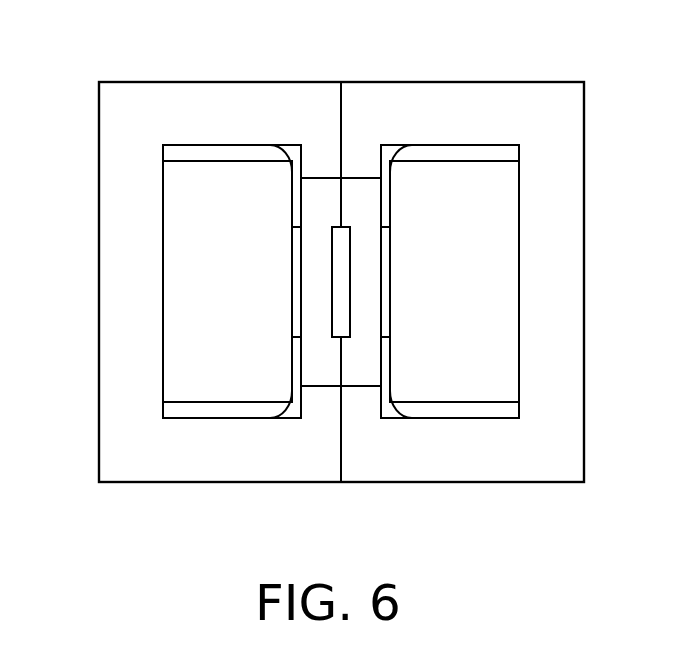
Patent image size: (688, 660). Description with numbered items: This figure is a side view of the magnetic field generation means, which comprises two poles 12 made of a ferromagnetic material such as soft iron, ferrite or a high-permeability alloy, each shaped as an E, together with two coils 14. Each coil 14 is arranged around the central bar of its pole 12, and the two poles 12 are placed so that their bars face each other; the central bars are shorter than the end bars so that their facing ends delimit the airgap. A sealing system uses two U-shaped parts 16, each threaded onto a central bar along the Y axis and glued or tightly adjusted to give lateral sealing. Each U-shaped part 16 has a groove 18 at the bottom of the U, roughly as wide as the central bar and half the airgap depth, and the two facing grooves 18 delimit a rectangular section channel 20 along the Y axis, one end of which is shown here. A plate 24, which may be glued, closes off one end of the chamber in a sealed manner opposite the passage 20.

The pole 12 is at (115, 132).
The coil 14 is at (180, 320).
The U-shaped part 16 is at (328, 162).
The groove 18 is at (349, 250).
The rectangular section channel 20 is at (332, 340).
The plate 24 is at (417, 409).